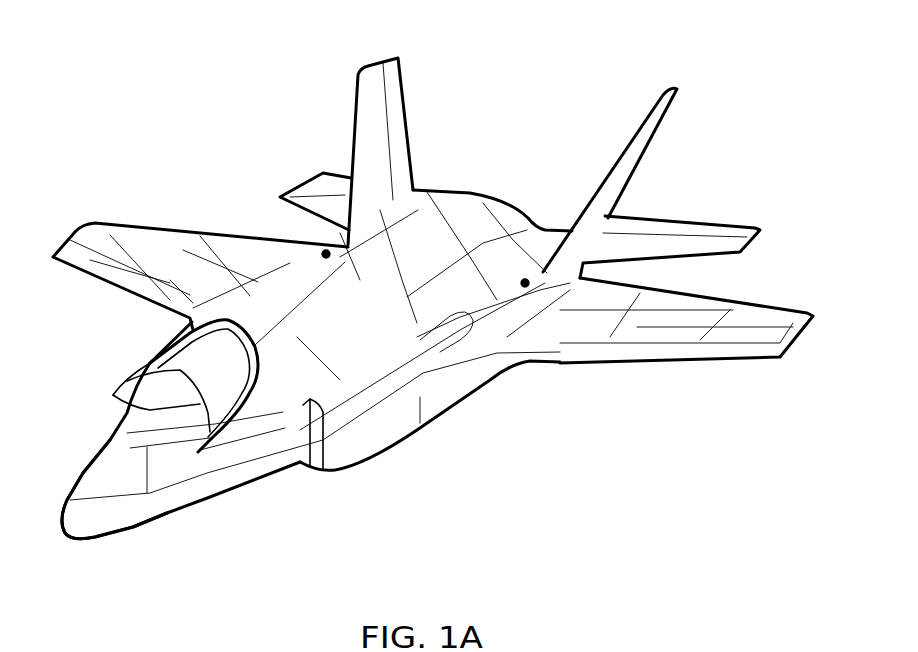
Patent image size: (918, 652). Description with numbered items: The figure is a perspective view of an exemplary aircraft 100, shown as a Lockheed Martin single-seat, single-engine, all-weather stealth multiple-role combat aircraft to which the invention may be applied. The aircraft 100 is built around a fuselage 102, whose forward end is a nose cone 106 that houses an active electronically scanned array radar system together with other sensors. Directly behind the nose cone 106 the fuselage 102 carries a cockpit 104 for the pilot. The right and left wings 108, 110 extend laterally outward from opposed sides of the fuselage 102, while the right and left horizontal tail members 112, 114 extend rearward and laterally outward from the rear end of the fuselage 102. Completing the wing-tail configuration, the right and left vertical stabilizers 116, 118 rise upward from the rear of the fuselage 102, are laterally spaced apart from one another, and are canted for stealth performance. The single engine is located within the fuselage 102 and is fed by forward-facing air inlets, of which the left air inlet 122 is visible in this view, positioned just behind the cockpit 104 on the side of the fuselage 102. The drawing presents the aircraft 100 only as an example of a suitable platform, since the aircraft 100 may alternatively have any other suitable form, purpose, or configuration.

The aircraft 100 is at (218, 155).
The fuselage 102 is at (352, 332).
The cockpit 104 is at (177, 413).
The nose cone 106 is at (90, 507).
The right wing 108 is at (118, 243).
The left wing 110 is at (723, 322).
The right horizontal tail member 112 is at (320, 192).
The left horizontal tail member 114 is at (657, 238).
The right vertical stabilizer 116 is at (380, 130).
The left vertical stabilizer 118 is at (622, 147).
The left air inlet 122 is at (316, 443).